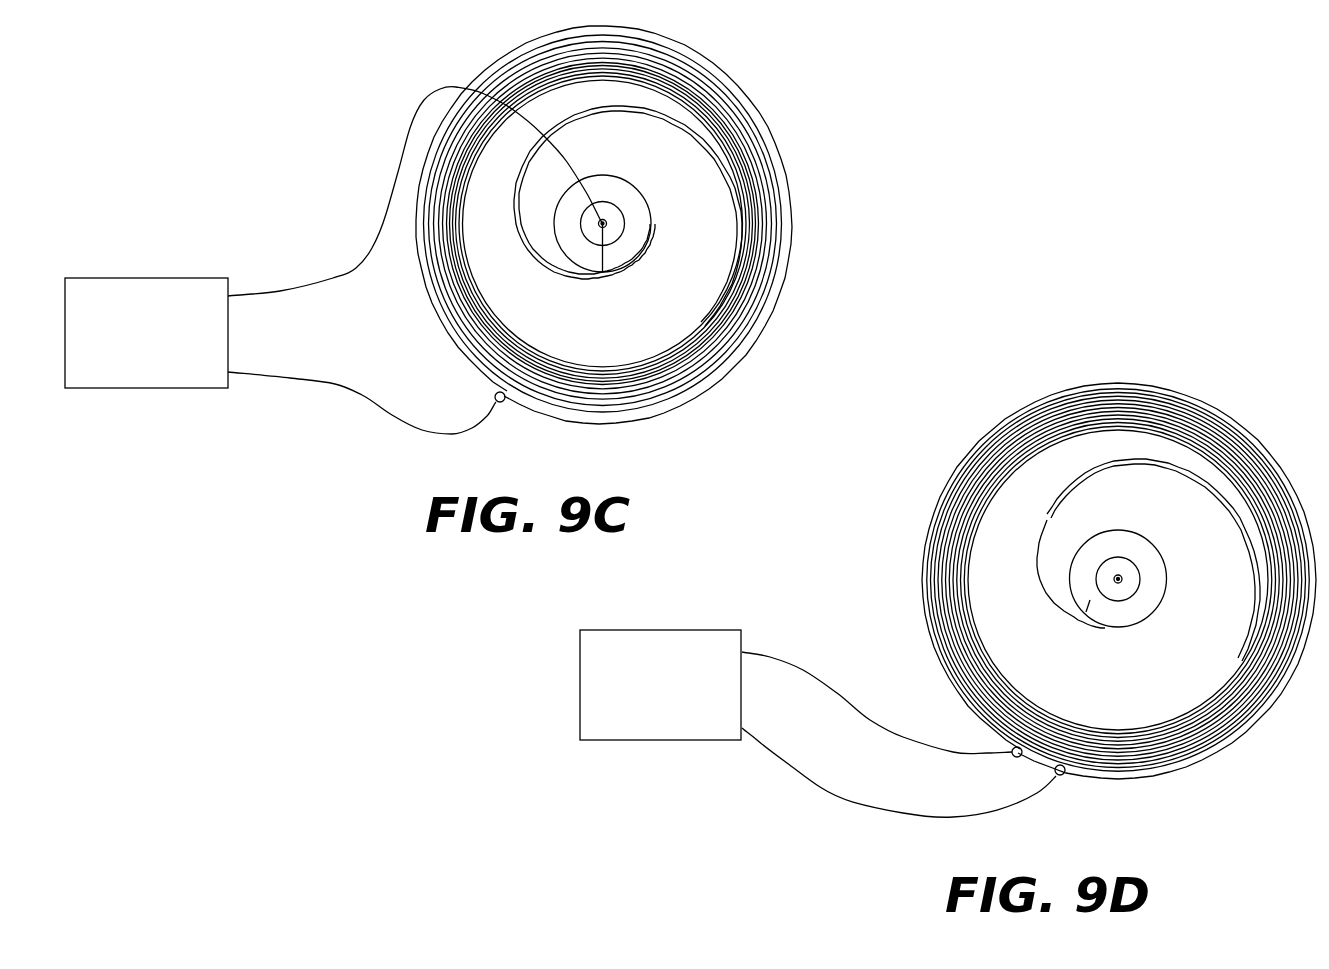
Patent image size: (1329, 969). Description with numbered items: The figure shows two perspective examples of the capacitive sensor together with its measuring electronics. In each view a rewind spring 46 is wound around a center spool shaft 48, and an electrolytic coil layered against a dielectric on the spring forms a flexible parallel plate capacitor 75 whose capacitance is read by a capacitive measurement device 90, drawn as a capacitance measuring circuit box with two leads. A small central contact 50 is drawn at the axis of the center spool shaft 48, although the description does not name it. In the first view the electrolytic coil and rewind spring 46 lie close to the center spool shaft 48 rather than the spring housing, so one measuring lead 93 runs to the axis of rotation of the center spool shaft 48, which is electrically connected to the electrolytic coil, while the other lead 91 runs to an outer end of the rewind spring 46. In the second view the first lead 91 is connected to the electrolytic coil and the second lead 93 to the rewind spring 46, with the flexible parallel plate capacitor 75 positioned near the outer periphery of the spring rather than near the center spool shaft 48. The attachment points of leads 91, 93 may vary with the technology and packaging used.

In FIG. 9C, the rewind spring 46 is at (797, 197).
In FIG. 9D, the rewind spring 46 is at (1045, 580).
In FIG. 9C, the center spool shaft 48 is at (626, 248).
In FIG. 9D, the center spool shaft 48 is at (1153, 588).
In FIG. 9C, the center contact 50 is at (613, 213).
In FIG. 9D, the center contact 50 is at (1130, 568).
In FIG. 9C, the flexible parallel plate capacitor 75 is at (538, 365).
In FIG. 9D, the flexible parallel plate capacitor 75 is at (1253, 618).
In FIG. 9C, the capacitive measurement device 90 is at (118, 390).
In FIG. 9D, the capacitive measurement device 90 is at (652, 742).
In FIG. 9C, the first lead 91 is at (336, 376).
In FIG. 9D, the first lead 91 is at (827, 790).
In FIG. 9C, the second lead 93 is at (342, 284).
In FIG. 9D, the second lead 93 is at (873, 717).